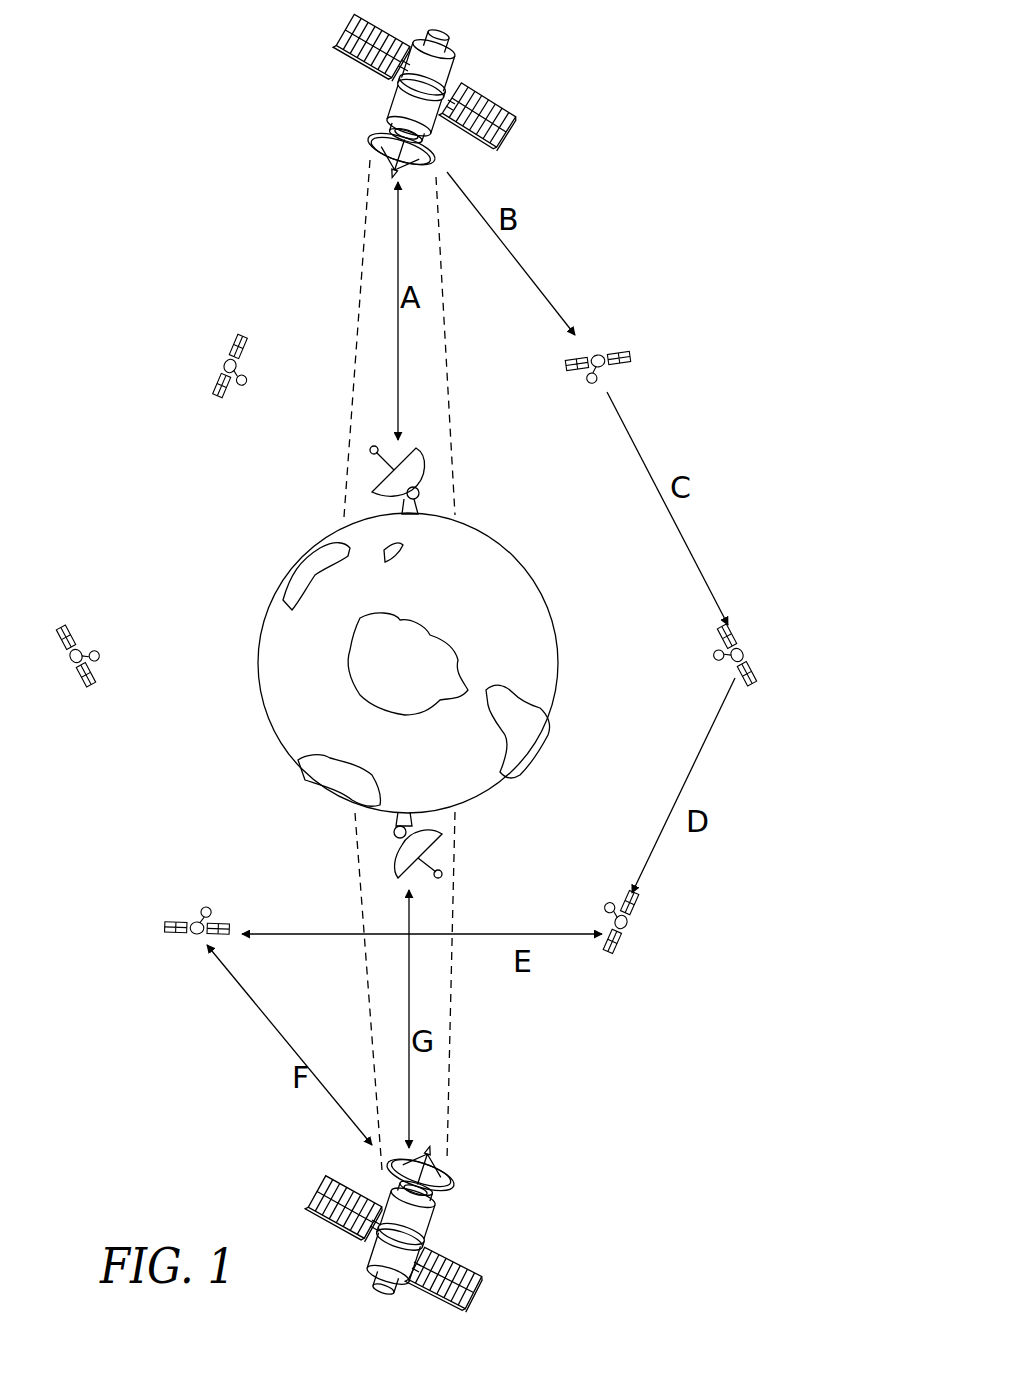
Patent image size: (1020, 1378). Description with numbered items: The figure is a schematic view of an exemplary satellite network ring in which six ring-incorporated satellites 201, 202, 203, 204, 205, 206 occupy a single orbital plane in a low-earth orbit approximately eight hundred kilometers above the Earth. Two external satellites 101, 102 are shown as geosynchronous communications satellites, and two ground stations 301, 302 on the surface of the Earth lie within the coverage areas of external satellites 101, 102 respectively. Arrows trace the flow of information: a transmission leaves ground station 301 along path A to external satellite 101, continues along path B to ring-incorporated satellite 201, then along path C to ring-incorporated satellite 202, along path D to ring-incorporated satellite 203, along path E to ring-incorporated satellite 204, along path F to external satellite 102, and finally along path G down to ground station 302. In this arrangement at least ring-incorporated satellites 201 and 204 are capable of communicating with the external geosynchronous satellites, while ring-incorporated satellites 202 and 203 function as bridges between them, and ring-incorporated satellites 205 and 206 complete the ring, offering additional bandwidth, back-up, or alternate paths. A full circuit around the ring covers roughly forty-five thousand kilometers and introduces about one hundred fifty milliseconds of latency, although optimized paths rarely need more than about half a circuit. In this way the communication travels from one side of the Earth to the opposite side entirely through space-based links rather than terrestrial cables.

The external satellite 101 is at (437, 42).
The external satellite 102 is at (432, 1232).
The ring-incorporated satellite 201 is at (600, 352).
The ring-incorporated satellite 202 is at (746, 652).
The ring-incorporated satellite 203 is at (638, 928).
The ring-incorporated satellite 204 is at (195, 915).
The ring-incorporated satellite 205 is at (92, 648).
The ring-incorporated satellite 206 is at (215, 362).
The ground station 301 is at (370, 483).
The ground station 302 is at (385, 862).